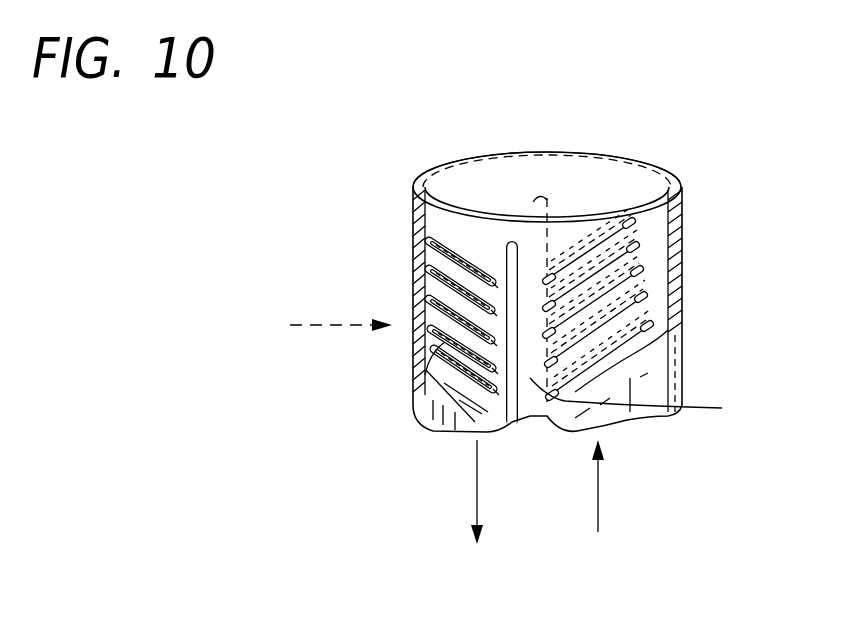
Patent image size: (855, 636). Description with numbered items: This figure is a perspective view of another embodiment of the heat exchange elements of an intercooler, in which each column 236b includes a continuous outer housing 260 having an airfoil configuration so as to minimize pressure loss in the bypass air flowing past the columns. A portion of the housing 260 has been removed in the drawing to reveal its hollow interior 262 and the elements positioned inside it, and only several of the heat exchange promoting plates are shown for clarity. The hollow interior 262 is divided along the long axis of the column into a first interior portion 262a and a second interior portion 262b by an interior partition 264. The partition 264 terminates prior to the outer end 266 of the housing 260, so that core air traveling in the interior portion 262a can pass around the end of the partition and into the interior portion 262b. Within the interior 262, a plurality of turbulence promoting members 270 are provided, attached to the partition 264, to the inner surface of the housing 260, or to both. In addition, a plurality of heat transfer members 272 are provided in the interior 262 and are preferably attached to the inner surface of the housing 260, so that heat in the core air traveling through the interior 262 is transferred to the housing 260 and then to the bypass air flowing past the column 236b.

The outer housing 260 is at (511, 138).
The outer end 266 is at (562, 185).
The hollow interior 262 is at (456, 233).
The heat transfer members 272 is at (443, 332).
The turbulence promoting members 270 is at (653, 222).
The interior portion 262a is at (668, 276).
The column 236b is at (655, 139).
The interior portion 262b is at (422, 372).
The interior partition 264 is at (698, 410).